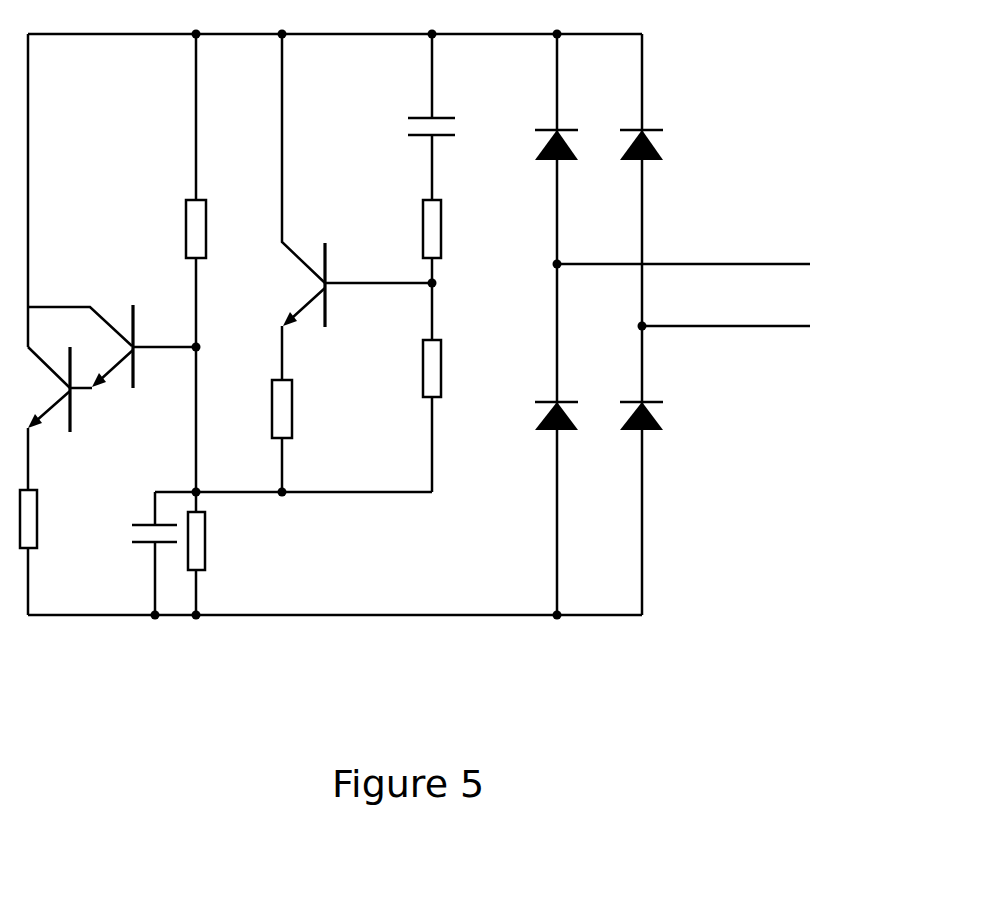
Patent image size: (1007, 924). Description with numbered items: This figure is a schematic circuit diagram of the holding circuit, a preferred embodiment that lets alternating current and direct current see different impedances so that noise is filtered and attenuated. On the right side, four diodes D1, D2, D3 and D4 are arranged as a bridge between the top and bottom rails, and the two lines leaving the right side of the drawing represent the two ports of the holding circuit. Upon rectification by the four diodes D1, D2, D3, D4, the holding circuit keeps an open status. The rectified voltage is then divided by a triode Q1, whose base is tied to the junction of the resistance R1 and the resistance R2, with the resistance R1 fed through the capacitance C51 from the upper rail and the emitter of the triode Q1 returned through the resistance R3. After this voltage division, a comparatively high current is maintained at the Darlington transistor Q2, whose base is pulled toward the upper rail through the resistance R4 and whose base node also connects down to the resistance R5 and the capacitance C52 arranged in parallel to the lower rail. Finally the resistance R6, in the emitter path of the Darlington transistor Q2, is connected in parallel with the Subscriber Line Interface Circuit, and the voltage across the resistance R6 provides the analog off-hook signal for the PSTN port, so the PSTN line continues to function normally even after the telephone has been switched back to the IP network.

The triode Q1 is at (359, 180).
The Darlington transistor Q2 is at (114, 368).
The resistor R1 is at (456, 270).
The resistor R2 is at (456, 416).
The resistor R3 is at (305, 409).
The resistor R4 is at (218, 263).
The resistor R5 is at (220, 553).
The resistance R6 is at (52, 521).
The capacitor C51 is at (456, 117).
The capacitor C52 is at (135, 550).
The diode D1 is at (656, 168).
The diode D2 is at (657, 439).
The diode D3 is at (572, 169).
The diode D4 is at (572, 440).